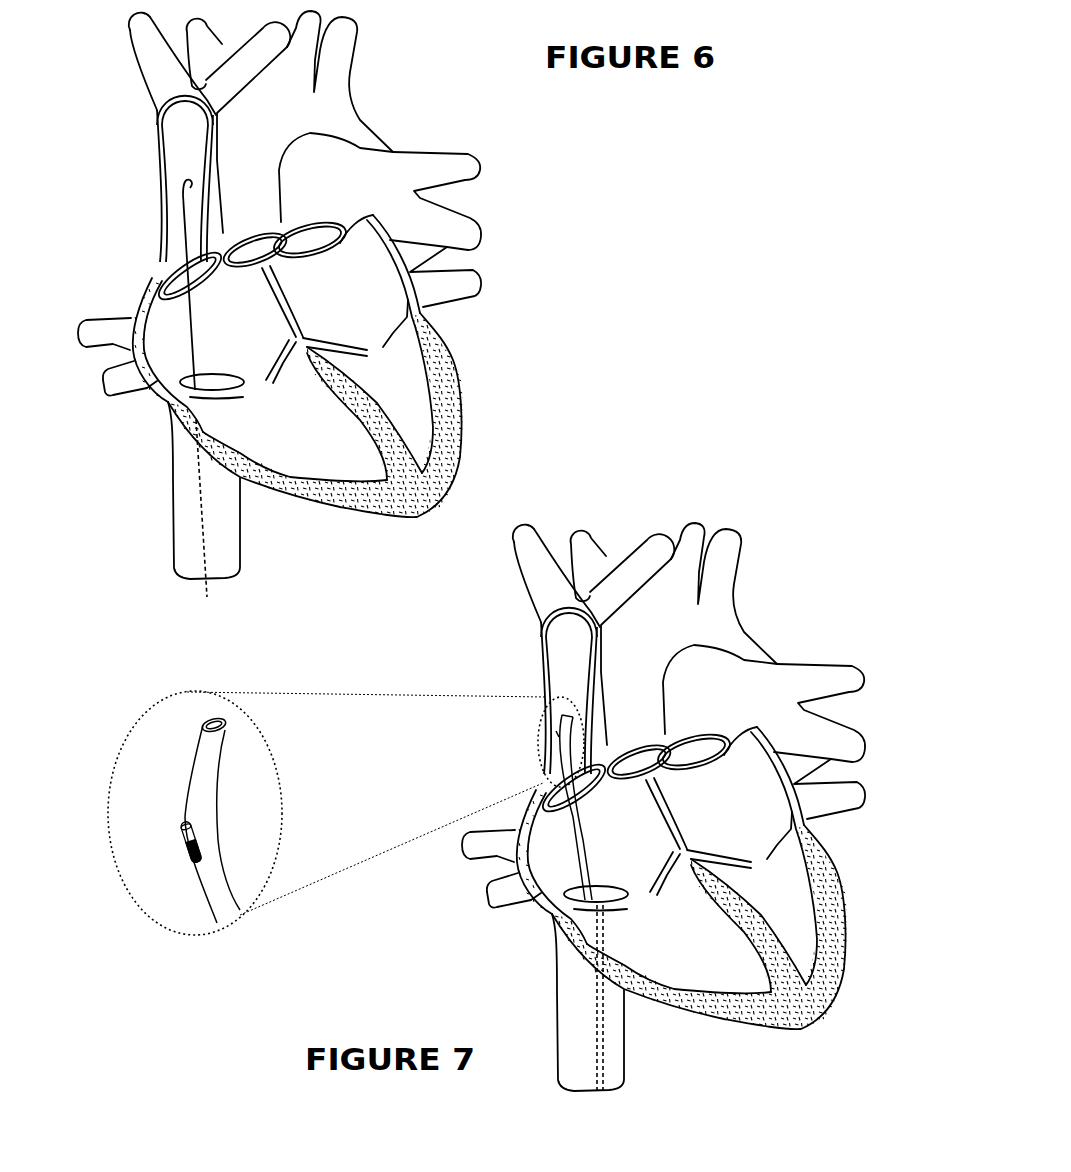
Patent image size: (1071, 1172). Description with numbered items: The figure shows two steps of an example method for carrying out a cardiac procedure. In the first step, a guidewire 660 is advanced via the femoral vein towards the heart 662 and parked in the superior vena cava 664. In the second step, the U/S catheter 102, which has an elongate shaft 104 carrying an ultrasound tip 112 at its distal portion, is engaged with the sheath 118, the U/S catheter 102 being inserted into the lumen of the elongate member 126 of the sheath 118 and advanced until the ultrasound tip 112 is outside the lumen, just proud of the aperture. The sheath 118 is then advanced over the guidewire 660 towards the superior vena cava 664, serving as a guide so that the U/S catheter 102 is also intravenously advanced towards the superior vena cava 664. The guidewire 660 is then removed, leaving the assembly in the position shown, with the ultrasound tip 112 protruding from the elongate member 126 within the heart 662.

In FIG. 7, the U/S catheter 102 is at (184, 850).
In FIG. 7, the elongate shaft 104 is at (196, 842).
In FIG. 7, the ultrasound tip 112 is at (182, 826).
In FIG. 7, the sheath 118 is at (324, 864).
In FIG. 7, the elongate member 126 is at (227, 880).
In FIG. 6, the guidewire 660 is at (176, 232).
In FIG. 6, the heart 662 is at (440, 125).
In FIG. 7, the heart 662 is at (793, 622).
In FIG. 6, the superior vena cava 664 is at (160, 147).
In FIG. 7, the superior vena cava 664 is at (555, 640).